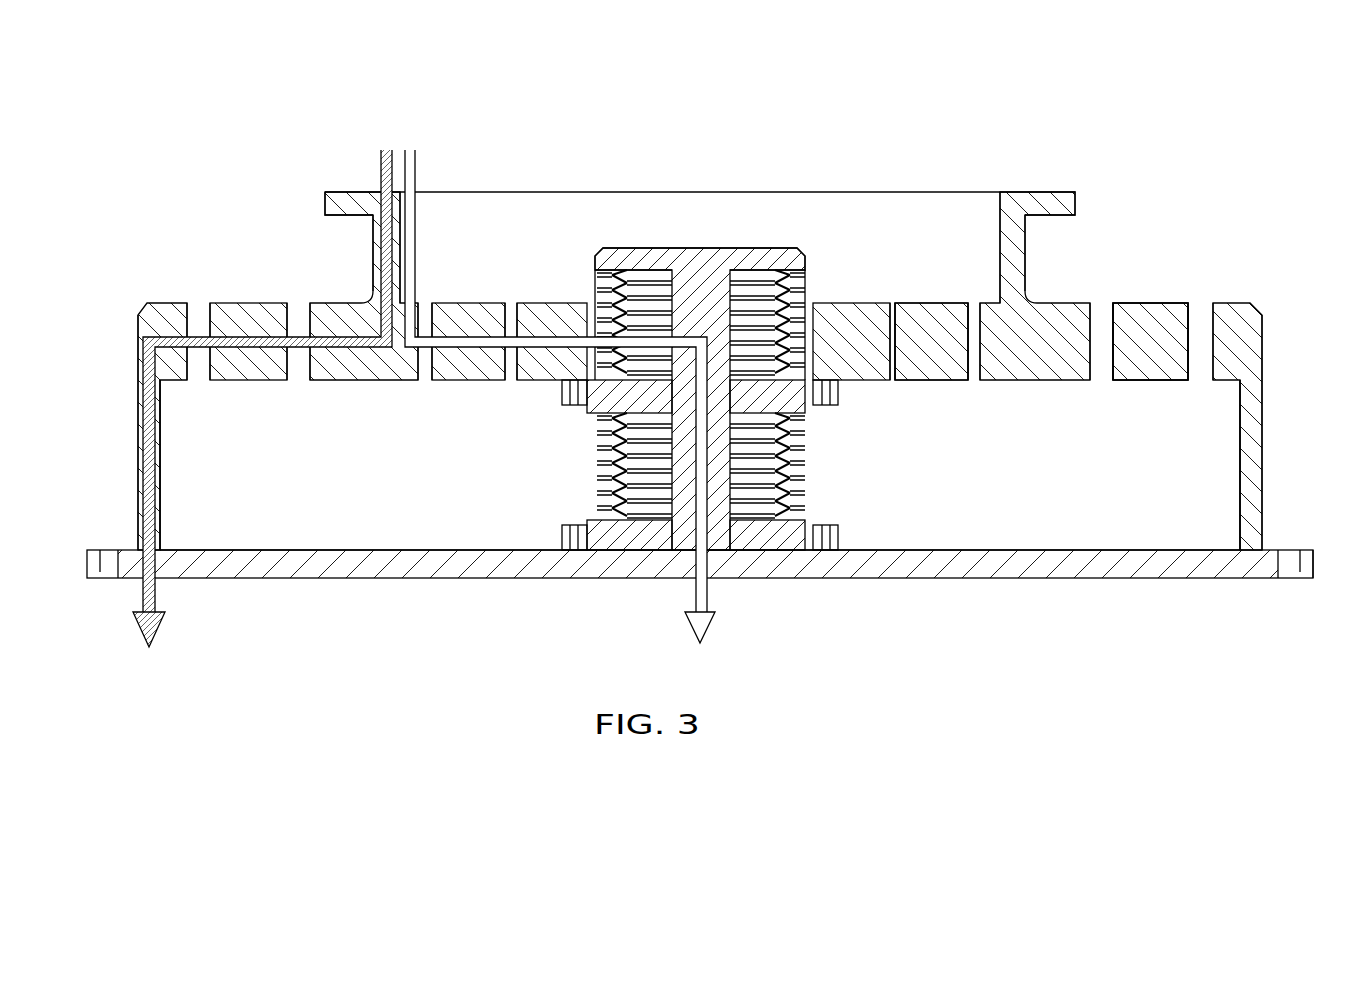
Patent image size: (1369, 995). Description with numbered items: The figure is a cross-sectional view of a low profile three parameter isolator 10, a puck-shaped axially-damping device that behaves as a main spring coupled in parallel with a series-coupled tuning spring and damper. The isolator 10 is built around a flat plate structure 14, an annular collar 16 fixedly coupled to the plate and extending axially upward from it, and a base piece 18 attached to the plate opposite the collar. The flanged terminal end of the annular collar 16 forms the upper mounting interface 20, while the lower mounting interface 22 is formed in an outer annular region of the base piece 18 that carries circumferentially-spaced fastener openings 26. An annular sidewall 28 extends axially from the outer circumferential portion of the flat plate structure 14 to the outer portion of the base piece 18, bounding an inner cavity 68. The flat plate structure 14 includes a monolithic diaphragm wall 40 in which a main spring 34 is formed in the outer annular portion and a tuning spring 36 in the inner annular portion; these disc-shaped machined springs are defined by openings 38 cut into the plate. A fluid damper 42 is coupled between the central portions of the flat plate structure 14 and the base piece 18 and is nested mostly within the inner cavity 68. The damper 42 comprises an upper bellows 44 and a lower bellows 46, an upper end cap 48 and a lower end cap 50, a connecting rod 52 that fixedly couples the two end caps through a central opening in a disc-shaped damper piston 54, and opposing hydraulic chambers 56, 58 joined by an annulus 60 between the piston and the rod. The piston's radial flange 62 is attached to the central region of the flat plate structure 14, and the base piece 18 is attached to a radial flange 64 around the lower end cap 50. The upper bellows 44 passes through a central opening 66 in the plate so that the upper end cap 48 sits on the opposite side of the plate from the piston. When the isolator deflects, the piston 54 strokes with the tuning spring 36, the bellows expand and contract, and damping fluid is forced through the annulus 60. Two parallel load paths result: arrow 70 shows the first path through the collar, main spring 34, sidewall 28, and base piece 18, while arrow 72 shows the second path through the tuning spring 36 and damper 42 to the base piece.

The low profile three parameter isolator 10 is at (185, 160).
The flat plate structure 14 is at (1270, 303).
The annular collar 16 is at (1031, 255).
The base piece 18 is at (995, 580).
The mounting interface 20 is at (1048, 194).
The mounting interface 22 is at (1314, 562).
The fastener openings 26 is at (112, 573).
The annular sidewall 28 is at (1270, 382).
The main spring 34 is at (1161, 301).
The tuning spring 36 is at (922, 301).
The openings 38 is at (198, 383).
The diaphragm wall 40 is at (1148, 381).
The damper 42 is at (714, 381).
The upper bellows 44 is at (597, 292).
The lower bellows 46 is at (597, 468).
The upper end cap 48 is at (643, 247).
The lower end cap 50 is at (635, 551).
The connecting rod 52 is at (704, 273).
The damper piston 54 is at (603, 399).
The hydraulic chamber 56 is at (745, 286).
The hydraulic chamber 58 is at (743, 480).
The annulus 60 is at (739, 388).
The radial flange 62 is at (836, 404).
The radial flange 64 is at (839, 537).
The central opening 66 is at (815, 316).
The inner cavity 68 is at (1055, 489).
The arrow 70 is at (158, 628).
The arrow 72 is at (710, 628).